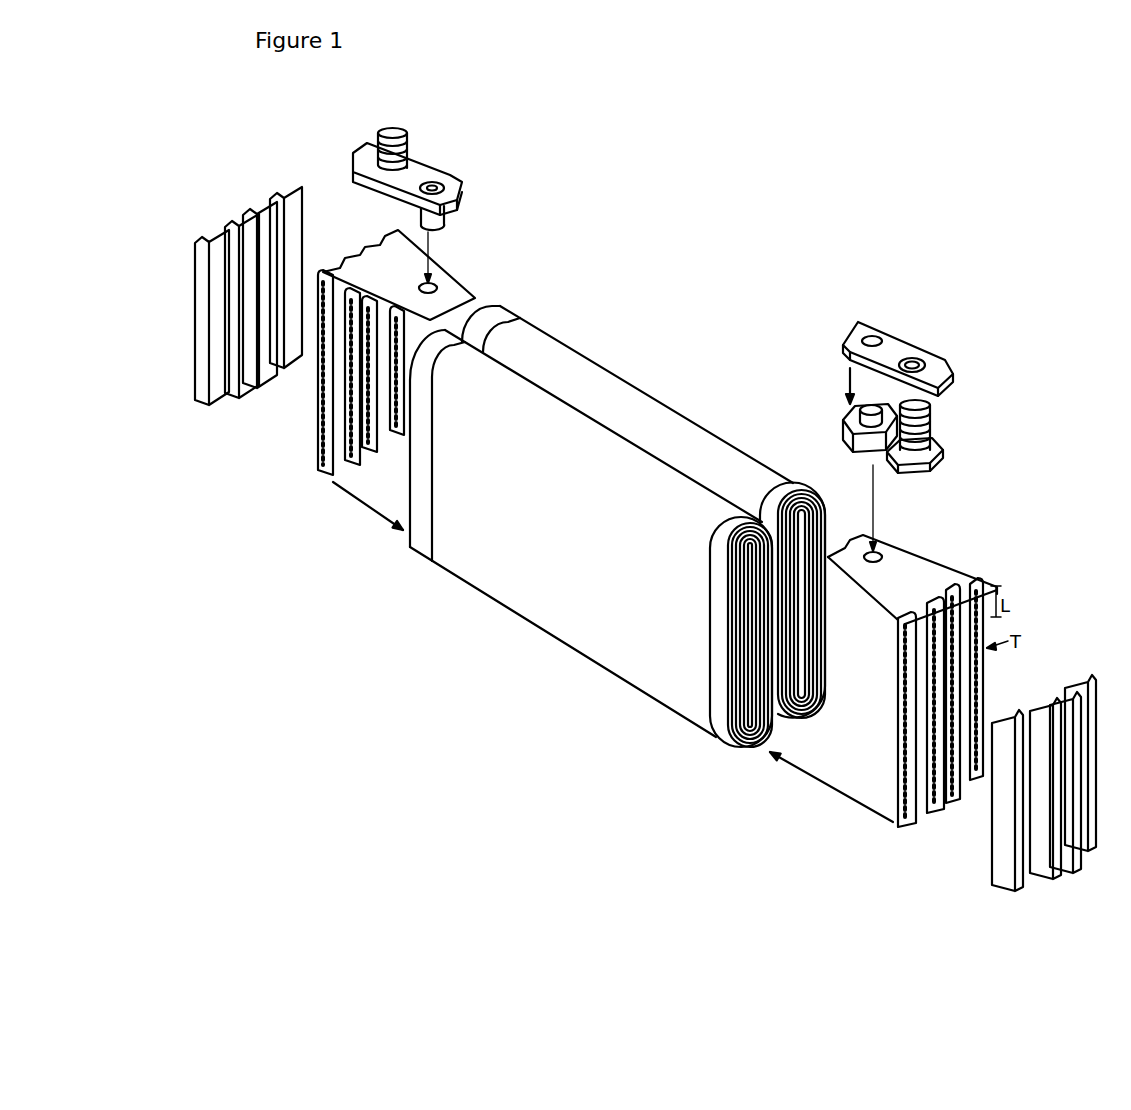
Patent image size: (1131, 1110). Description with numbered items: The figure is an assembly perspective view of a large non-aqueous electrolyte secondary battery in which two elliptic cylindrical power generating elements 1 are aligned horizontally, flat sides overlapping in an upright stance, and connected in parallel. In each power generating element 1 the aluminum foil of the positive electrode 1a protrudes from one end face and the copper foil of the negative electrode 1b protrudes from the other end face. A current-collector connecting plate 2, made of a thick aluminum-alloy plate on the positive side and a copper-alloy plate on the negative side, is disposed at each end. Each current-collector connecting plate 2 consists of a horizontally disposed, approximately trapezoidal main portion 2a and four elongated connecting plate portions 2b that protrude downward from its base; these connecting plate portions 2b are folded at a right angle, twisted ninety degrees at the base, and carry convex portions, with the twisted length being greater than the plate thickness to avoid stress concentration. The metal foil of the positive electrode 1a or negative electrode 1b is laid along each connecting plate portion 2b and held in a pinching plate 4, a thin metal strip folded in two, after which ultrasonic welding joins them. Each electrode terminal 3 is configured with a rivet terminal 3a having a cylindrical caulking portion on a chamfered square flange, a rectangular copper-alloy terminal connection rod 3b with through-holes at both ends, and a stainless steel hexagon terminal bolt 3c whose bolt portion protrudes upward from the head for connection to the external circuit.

The power generating element 1 is at (634, 500).
The positive electrode 1a is at (712, 647).
The negative electrode 1b is at (493, 303).
The current-collector connecting plate 2 is at (658, 517).
The main portion 2a is at (443, 273).
The connecting plate portion 2b is at (317, 437).
The electrode terminal 3 is at (683, 295).
The rivet terminal 3a is at (443, 186).
The terminal connection rod 3b is at (416, 168).
The terminal bolt 3c is at (378, 134).
The pinching plate 4 is at (240, 213).